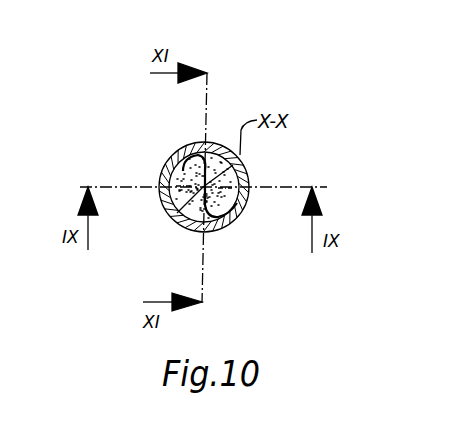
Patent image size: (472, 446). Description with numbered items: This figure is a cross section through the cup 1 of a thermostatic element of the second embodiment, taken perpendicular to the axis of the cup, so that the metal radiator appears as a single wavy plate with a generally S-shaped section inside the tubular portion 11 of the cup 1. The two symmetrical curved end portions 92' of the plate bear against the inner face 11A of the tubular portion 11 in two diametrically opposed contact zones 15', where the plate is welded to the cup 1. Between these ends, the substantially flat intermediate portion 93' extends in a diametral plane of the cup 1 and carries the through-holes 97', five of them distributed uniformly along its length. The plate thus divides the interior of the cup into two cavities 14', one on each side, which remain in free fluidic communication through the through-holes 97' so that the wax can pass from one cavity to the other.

The cup 1 is at (186, 136).
The tubular portion 11 is at (227, 232).
The inner face 11A is at (208, 233).
The cavities 14' is at (184, 161).
The contact zones 15' is at (207, 186).
The curved end portions 92' is at (199, 186).
The intermediate portion 93' is at (170, 232).
The through-holes 97' is at (260, 166).